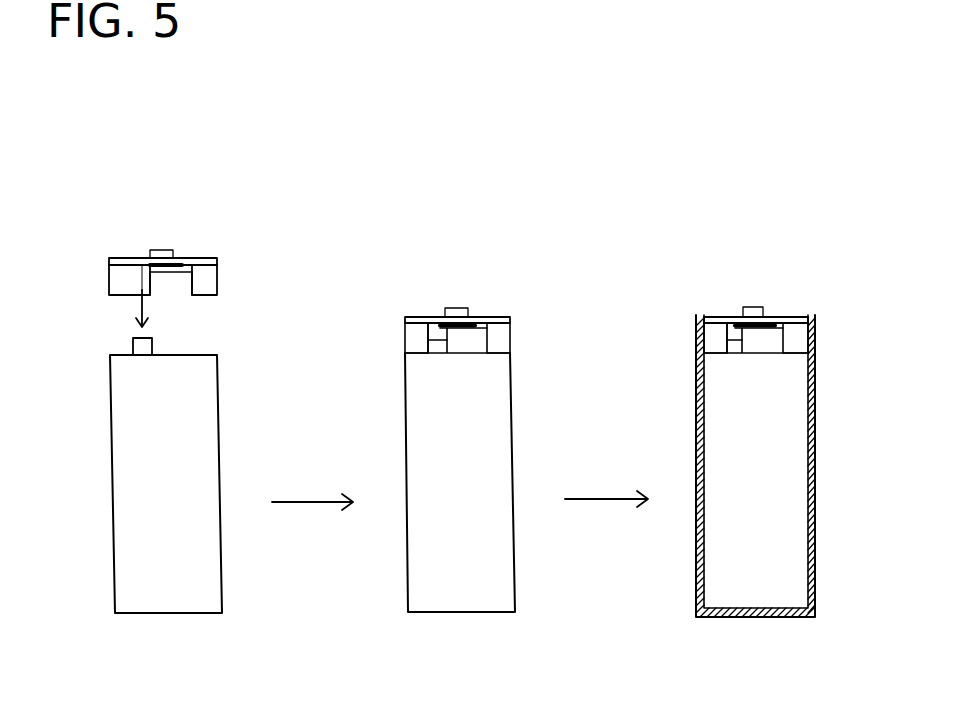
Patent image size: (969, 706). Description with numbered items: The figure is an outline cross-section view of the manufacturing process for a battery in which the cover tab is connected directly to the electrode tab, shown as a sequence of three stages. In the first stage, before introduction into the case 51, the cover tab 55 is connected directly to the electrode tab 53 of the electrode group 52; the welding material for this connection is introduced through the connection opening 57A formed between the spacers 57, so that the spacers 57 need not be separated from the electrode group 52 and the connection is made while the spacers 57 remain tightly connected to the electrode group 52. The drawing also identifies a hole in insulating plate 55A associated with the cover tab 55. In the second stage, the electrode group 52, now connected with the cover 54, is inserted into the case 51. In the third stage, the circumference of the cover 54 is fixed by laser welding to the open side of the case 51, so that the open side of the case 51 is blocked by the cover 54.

The case 51 is at (815, 433).
The electrode group 52 is at (187, 543).
The electrode tab 53 is at (133, 345).
The cover 54 is at (206, 258).
The cover tab 55 is at (148, 268).
The hole in insulating plate 55A is at (142, 274).
The spacers 57 is at (212, 283).
The connection opening 57A is at (176, 294).